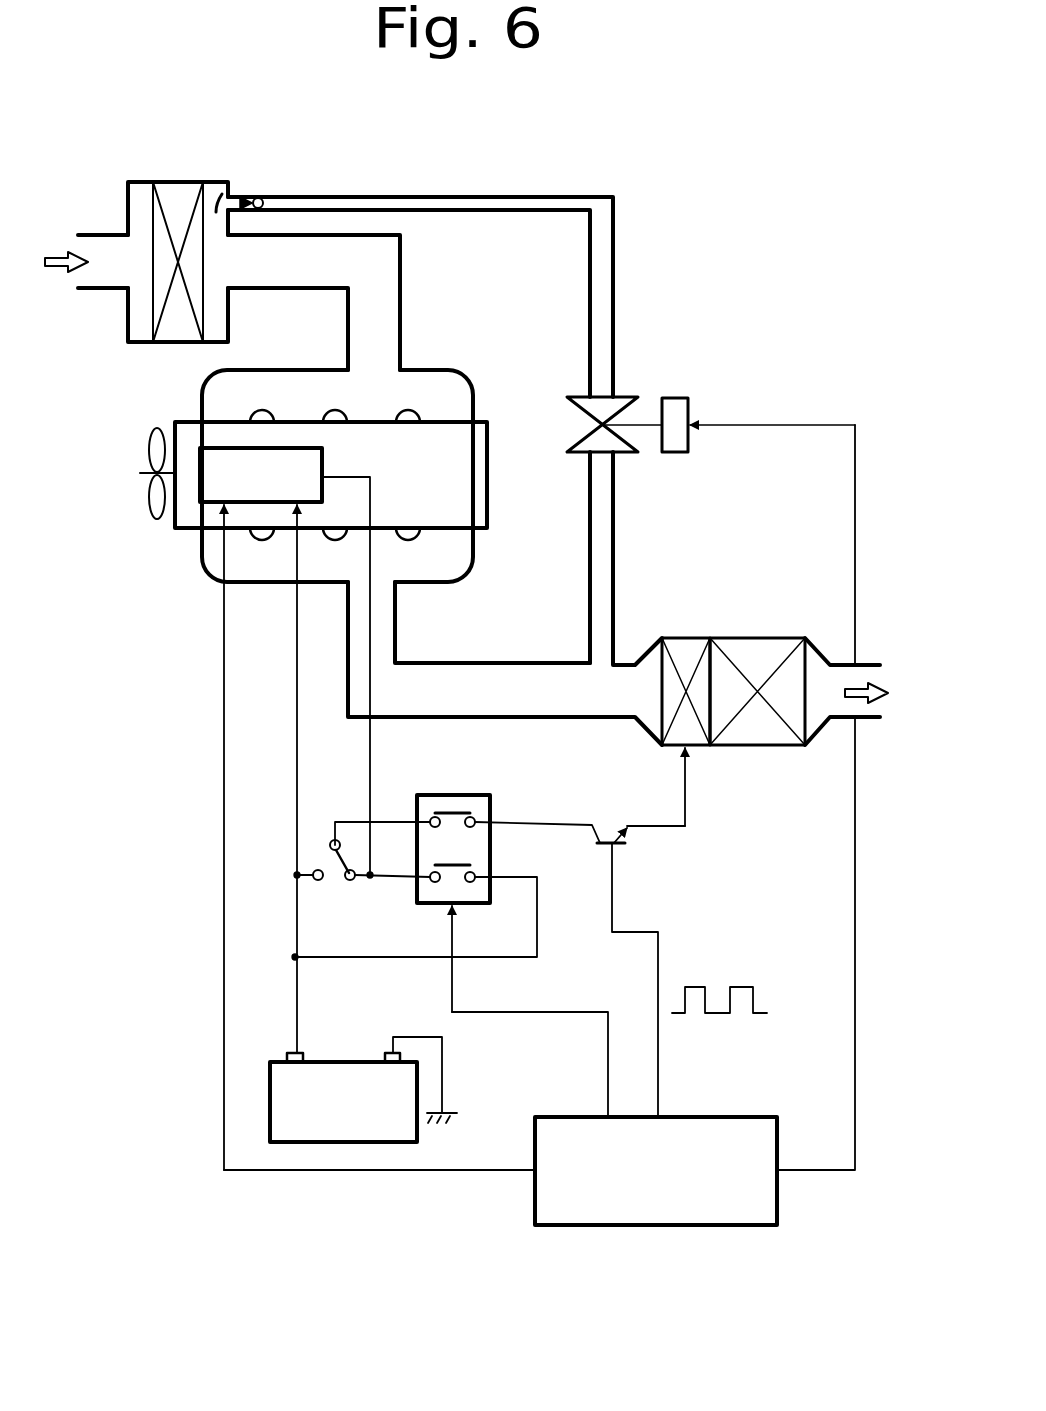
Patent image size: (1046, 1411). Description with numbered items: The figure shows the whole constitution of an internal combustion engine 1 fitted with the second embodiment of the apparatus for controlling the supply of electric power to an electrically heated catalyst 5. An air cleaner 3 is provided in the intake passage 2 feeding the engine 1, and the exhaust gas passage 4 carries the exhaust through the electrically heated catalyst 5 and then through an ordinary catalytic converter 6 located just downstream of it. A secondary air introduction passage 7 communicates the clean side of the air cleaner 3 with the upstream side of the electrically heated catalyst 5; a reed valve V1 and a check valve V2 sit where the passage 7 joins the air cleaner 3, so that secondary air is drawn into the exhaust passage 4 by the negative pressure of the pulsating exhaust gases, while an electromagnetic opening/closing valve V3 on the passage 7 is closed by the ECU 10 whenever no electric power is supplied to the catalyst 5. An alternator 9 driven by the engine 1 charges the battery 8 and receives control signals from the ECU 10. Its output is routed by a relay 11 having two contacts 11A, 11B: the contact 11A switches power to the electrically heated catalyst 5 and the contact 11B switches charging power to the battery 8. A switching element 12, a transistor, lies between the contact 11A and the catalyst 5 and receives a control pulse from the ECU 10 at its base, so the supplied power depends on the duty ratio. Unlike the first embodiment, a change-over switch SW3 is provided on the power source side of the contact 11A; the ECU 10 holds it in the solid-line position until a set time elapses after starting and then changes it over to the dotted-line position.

The internal combustion engine 1 is at (487, 484).
The intake passage 2 is at (400, 290).
The air cleaner 3 is at (172, 182).
The exhaust gas passage 4 is at (500, 663).
The electrically heated catalyst 5 is at (692, 645).
The catalytic converter 6 is at (770, 648).
The secondary air introduction passage 7 is at (617, 545).
The battery 8 is at (347, 1062).
The alternator 9 is at (213, 483).
The ECU 10 is at (705, 1117).
The relay 11 is at (500, 816).
The contact 11A is at (478, 818).
The contact 11B is at (478, 870).
The switching element 12 is at (628, 840).
The reed valve V1 is at (216, 197).
The check valve V2 is at (262, 196).
The electromagnetic opening/closing valve V3 is at (625, 397).
The change-over switch SW3 is at (330, 884).